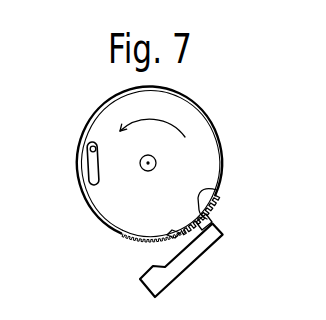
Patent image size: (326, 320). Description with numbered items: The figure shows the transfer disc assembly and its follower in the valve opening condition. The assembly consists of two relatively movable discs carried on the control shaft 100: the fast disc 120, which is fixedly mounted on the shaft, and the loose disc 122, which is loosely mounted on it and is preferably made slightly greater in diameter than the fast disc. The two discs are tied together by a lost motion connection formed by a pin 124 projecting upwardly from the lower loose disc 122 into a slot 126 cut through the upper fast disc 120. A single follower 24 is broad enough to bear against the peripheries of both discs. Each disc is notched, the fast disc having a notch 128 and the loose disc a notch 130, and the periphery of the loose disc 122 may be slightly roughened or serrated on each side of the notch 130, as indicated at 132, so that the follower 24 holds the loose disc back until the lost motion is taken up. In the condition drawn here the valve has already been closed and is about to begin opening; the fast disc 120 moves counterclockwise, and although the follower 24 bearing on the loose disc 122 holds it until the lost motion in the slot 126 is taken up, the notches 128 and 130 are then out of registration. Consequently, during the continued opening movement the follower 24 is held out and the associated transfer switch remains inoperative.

The follower 24 is at (188, 268).
The control shaft 100 is at (150, 171).
The fast disc 120 is at (222, 139).
The loose disc 122 is at (226, 177).
The pin 124 is at (90, 152).
The slot 126 is at (88, 178).
The notch 128 is at (222, 196).
The notch 130 is at (175, 237).
The serrations 132 is at (216, 214).